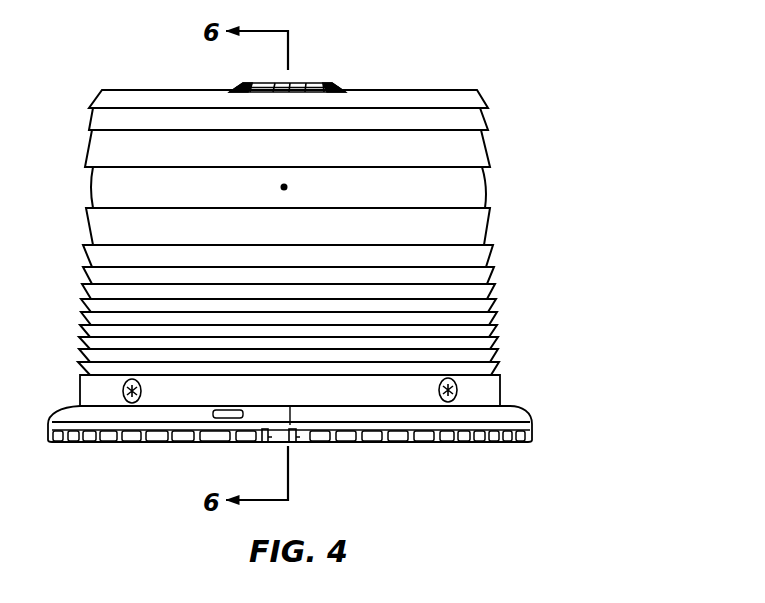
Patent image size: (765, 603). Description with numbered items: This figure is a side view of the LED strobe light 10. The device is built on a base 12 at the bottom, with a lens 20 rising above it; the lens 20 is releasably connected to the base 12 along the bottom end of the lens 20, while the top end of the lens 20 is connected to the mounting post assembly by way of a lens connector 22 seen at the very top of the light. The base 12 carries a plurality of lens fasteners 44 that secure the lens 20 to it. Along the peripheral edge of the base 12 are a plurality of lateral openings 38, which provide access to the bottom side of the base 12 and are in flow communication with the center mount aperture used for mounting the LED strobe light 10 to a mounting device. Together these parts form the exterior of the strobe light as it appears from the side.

The LED strobe light 10 is at (314, 256).
The base 12 is at (535, 411).
The lens 20 is at (458, 86).
The lens connector 22 is at (349, 84).
The lateral openings 38 is at (302, 443).
The lens fasteners 44 is at (124, 388).